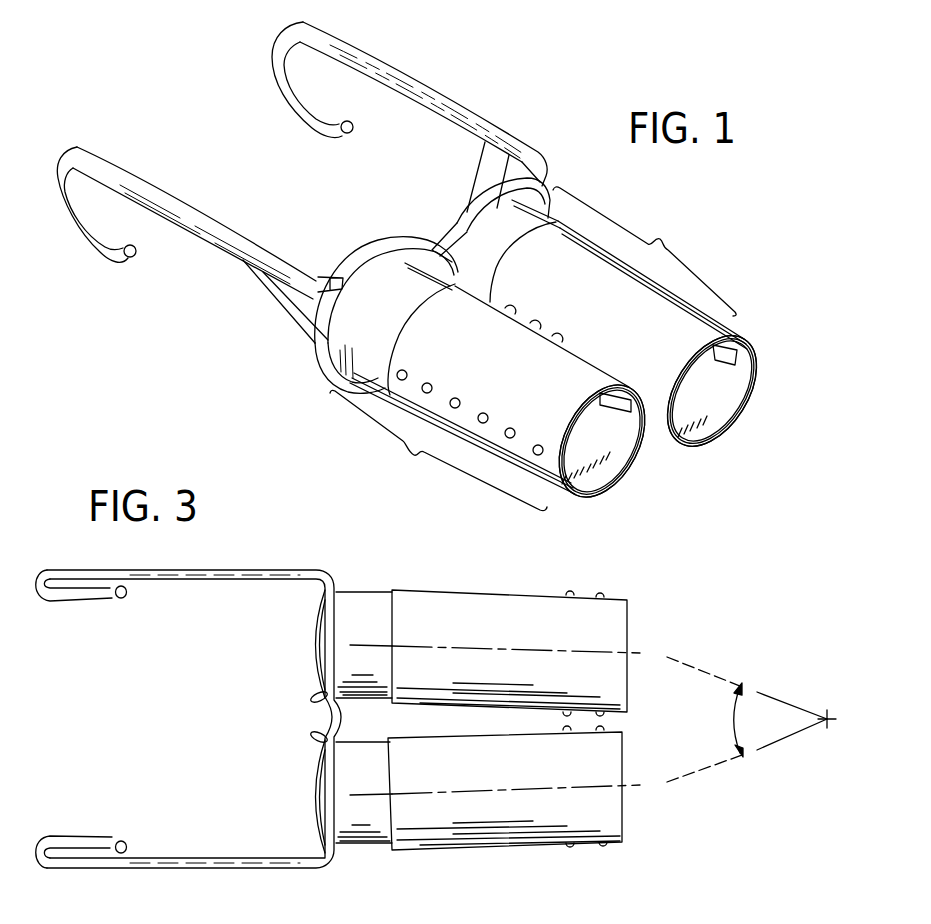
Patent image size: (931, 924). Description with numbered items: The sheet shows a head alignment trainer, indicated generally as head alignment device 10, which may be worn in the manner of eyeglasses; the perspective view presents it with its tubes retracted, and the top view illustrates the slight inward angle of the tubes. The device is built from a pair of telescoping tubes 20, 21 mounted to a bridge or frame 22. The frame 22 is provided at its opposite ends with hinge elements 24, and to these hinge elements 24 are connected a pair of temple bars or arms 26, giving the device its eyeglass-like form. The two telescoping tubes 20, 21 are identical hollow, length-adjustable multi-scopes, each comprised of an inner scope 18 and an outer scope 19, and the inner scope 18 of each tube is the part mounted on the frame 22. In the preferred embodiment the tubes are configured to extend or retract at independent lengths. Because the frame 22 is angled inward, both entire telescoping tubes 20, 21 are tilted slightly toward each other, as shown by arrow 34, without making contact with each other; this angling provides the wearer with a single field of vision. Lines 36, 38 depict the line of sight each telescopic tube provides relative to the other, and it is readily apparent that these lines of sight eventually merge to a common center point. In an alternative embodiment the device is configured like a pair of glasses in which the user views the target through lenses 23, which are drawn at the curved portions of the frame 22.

In FIG. 1, the head alignment device 10 is at (733, 458).
In FIG. 1, the inner scope 18 is at (503, 227).
In FIG. 3, the inner scope 18 is at (351, 592).
In FIG. 1, the outer scope 19 is at (712, 330).
In FIG. 3, the outer scope 19 is at (472, 590).
In FIG. 1, the telescoping tube 20 is at (496, 398).
In FIG. 1, the telescoping tube 21 is at (664, 324).
In FIG. 1, the frame 22 is at (385, 238).
In FIG. 3, the lenses 23 is at (320, 643).
In FIG. 1, the hinge elements 24 is at (322, 279).
In FIG. 1, the temple bars 26 is at (448, 98).
In FIG. 3, the arrow 34 is at (728, 717).
In FIG. 3, the line of sight 36 is at (686, 660).
In FIG. 3, the line of sight 38 is at (711, 768).